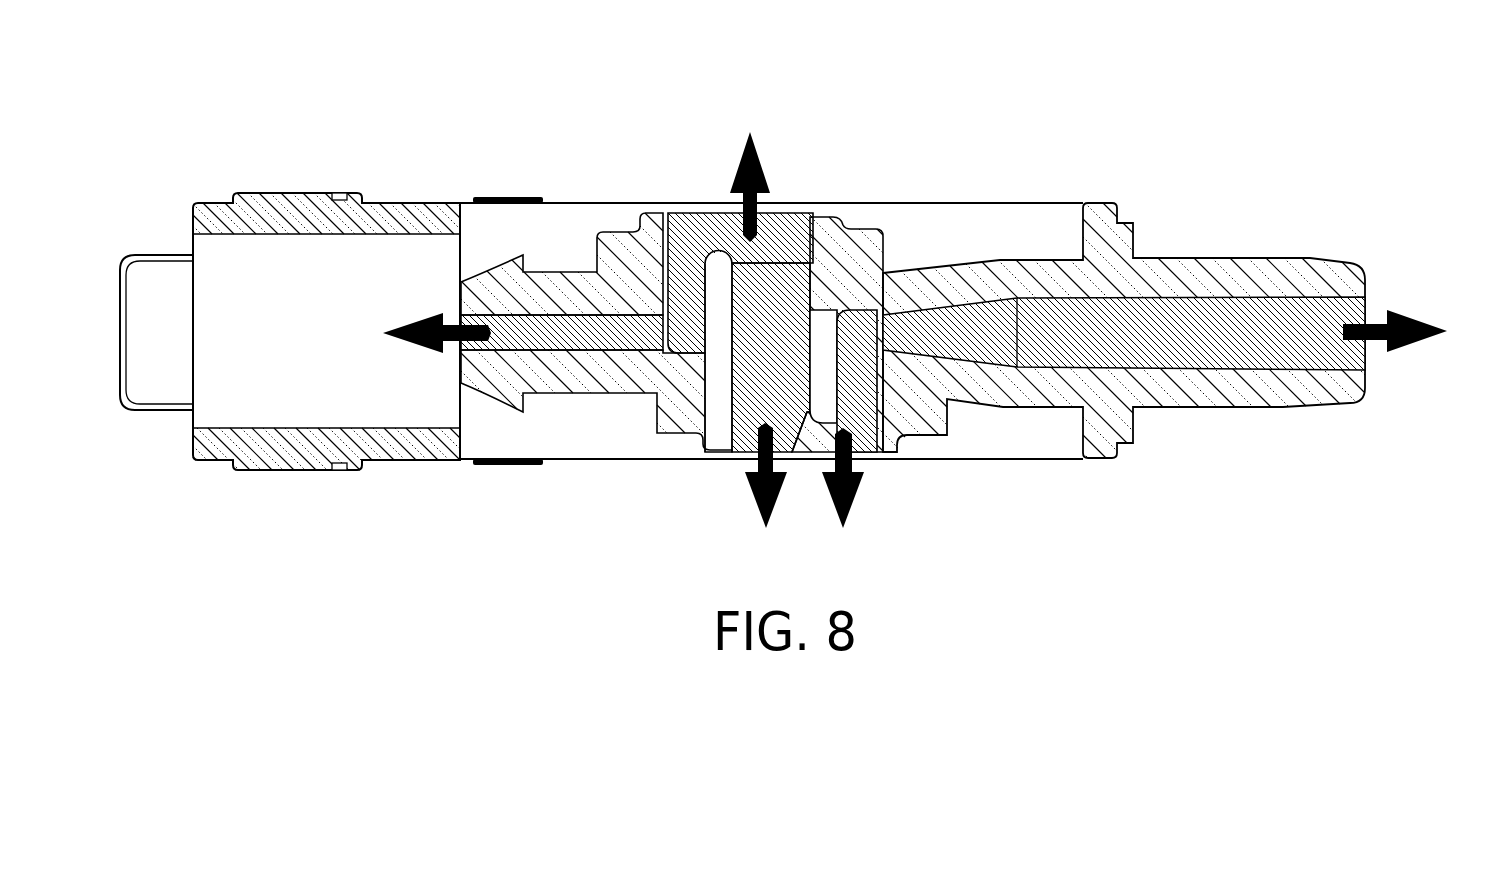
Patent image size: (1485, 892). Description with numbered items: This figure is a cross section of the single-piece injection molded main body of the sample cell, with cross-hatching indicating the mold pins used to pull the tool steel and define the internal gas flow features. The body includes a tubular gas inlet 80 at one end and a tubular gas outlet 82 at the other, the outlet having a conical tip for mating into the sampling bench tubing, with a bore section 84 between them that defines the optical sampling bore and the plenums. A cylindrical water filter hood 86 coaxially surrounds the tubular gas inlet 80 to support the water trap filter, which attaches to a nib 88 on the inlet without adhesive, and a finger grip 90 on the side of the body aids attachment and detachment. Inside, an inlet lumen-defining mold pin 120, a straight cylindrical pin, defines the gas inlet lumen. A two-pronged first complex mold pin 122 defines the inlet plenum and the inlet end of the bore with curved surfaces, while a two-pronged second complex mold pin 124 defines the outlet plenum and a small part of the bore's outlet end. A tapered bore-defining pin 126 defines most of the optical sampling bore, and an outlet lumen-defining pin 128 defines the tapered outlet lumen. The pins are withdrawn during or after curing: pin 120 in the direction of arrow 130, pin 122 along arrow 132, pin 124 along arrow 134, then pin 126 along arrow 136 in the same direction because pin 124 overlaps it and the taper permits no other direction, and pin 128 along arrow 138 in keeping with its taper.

The tubular gas inlet 80 is at (567, 268).
The tubular gas outlet 82 is at (1277, 266).
The bore section 84 is at (832, 220).
The cylindrical water filter hood 86 is at (248, 207).
The nib 88 is at (500, 262).
The finger grip 90 is at (165, 255).
The inlet lumen-defining mold pin 120 is at (575, 342).
The first complex mold pin 122 is at (705, 243).
The second complex mold pin 124 is at (870, 432).
The bore-defining pin 126 is at (752, 432).
The outlet lumen-defining pin 128 is at (1153, 342).
The arrow 130 is at (422, 355).
The arrow 132 is at (763, 165).
The arrow 134 is at (848, 507).
The arrow 136 is at (777, 503).
The arrow 138 is at (1403, 313).